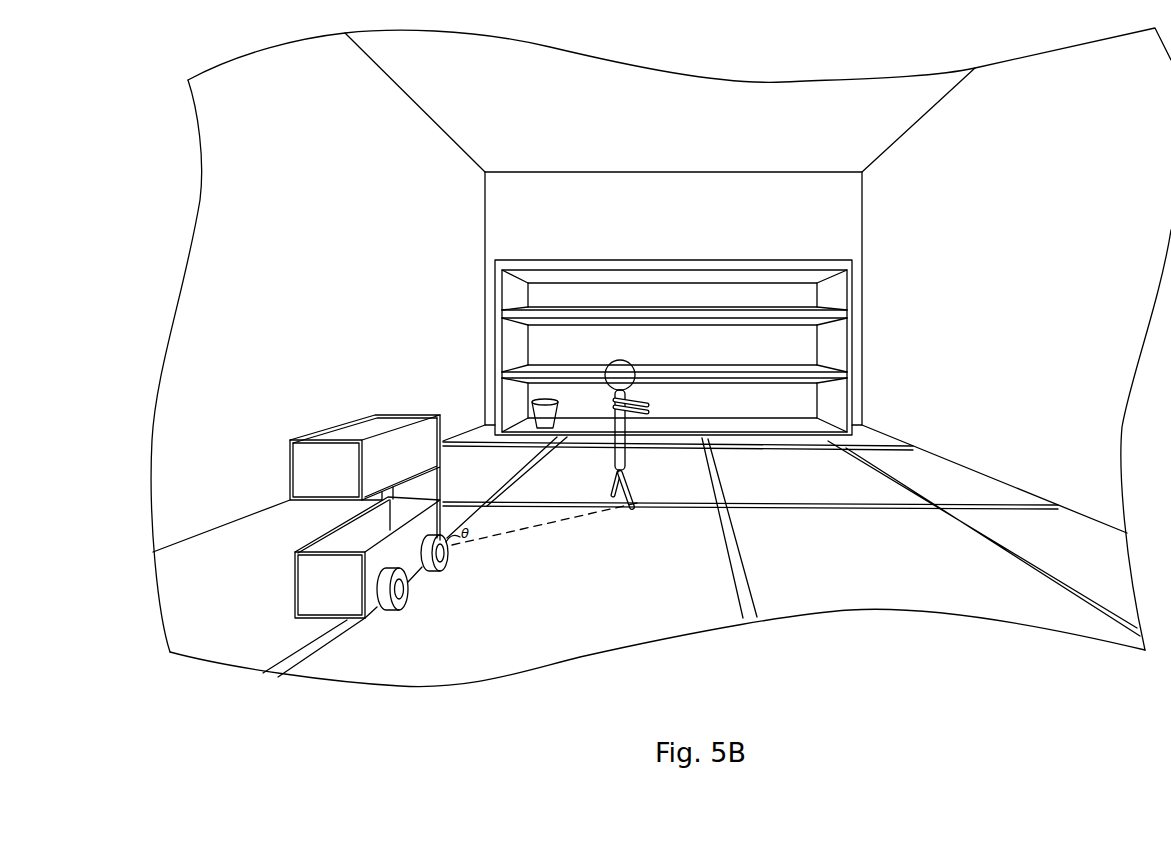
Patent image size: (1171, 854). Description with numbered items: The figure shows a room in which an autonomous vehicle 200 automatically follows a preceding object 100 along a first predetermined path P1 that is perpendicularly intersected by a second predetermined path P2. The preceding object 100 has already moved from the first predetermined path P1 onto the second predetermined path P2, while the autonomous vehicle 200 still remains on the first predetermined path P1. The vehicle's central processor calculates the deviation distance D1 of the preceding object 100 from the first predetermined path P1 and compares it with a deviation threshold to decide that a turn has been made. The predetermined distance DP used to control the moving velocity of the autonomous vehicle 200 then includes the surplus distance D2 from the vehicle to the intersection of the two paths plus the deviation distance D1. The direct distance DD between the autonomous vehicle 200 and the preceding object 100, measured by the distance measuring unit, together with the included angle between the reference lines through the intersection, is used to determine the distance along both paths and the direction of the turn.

The preceding object 100 is at (623, 454).
The autonomous vehicle 200 is at (380, 418).
The first predetermined path P1 is at (305, 645).
The second predetermined path P2 is at (673, 505).
The predetermined distance DP is at (363, 323).
The deviation distance D1 is at (552, 503).
The surplus distance D2 is at (473, 503).
The direct distance DD is at (565, 530).